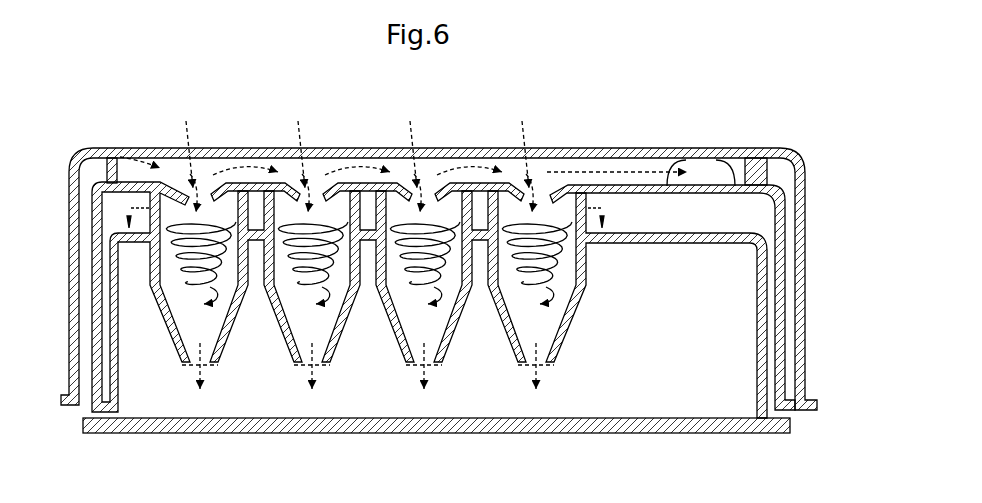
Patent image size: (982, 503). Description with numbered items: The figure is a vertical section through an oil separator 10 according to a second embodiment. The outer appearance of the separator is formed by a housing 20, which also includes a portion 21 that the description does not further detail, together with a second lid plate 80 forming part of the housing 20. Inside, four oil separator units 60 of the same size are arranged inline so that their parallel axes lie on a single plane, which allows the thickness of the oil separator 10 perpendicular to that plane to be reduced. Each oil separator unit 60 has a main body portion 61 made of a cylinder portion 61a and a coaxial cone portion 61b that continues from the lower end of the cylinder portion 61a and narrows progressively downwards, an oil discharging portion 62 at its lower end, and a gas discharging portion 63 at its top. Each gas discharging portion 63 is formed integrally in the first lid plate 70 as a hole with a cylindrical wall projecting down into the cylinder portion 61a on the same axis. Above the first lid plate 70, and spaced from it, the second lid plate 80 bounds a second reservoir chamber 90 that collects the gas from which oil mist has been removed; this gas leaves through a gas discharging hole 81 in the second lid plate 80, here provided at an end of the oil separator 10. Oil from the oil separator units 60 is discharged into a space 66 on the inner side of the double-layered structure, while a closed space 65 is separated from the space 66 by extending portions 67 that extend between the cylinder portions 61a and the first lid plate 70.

The oil separator 10 is at (140, 116).
The housing 20 is at (439, 284).
The lower case (bottom plate) 21 is at (610, 433).
The oil separator unit 60 is at (434, 312).
The main body portion 61 is at (667, 288).
The cylinder portion 61a is at (583, 281).
The cone portion 61b is at (573, 329).
The oil discharging portion 62 is at (193, 366).
The gas discharging portion 63 is at (353, 149).
The closed space 65 is at (737, 212).
The space 66 is at (725, 350).
The extending portion 67 is at (739, 229).
The first lid plate 70 is at (602, 184).
The second lid plate 80 is at (734, 159).
The gas discharging hole 81 is at (705, 172).
The second reservoir chamber 90 is at (118, 147).